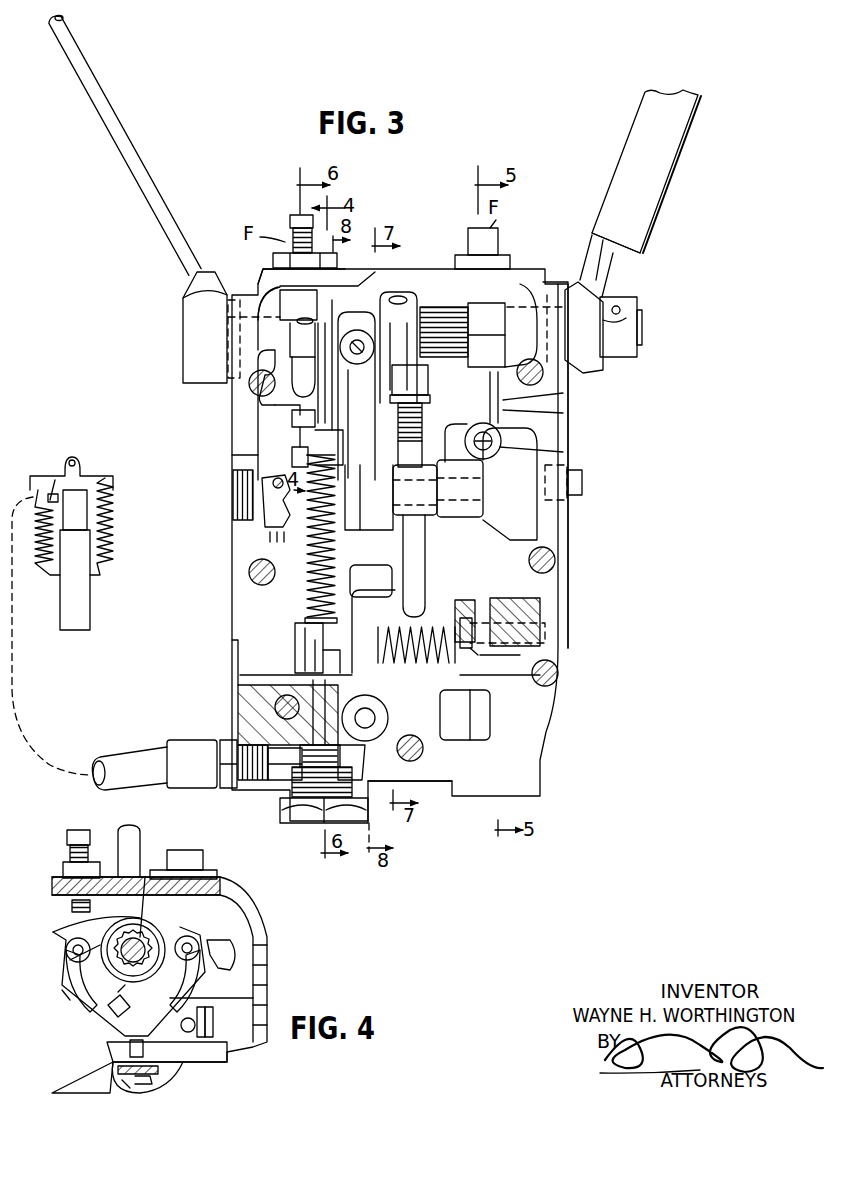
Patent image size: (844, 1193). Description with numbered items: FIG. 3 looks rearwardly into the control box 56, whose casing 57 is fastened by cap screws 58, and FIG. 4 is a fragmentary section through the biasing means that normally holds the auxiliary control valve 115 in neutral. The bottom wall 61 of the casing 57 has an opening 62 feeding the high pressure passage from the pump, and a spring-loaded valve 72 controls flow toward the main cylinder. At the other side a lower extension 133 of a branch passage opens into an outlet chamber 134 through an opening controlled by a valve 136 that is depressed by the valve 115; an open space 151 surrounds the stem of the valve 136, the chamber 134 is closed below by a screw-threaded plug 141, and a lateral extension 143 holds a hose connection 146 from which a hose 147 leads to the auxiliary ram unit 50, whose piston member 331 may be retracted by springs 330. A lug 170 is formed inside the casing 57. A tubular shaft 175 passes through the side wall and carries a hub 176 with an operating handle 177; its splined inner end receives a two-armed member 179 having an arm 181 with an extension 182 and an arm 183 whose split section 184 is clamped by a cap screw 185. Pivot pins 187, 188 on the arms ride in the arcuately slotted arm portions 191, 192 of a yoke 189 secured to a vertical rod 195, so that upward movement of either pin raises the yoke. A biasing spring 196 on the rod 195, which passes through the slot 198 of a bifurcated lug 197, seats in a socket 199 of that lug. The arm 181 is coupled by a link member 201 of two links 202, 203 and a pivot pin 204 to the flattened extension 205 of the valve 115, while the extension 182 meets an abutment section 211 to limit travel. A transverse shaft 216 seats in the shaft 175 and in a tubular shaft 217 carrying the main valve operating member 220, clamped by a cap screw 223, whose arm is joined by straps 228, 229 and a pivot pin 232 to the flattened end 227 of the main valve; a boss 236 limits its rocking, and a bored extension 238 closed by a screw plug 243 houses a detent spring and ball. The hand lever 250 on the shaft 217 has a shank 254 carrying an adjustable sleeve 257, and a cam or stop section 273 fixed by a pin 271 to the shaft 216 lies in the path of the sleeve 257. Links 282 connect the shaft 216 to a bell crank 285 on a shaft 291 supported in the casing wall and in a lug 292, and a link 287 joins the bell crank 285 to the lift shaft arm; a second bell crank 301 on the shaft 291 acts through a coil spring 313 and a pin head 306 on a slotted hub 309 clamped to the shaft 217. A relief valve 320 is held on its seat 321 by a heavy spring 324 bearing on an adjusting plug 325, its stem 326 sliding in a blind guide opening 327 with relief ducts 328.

In FIG. 3, the auxiliary cylinder or ram unit 50 is at (97, 593).
In FIG. 3, the valve or control box 56 is at (228, 456).
In FIG. 3, the casing or housing 57 is at (558, 517).
In FIG. 4, the casing or housing 57 is at (263, 957).
In FIG. 3, the cap screws 58 is at (556, 562).
In FIG. 3, the bottom wall 61 is at (432, 766).
In FIG. 3, the opening 62 is at (483, 723).
In FIG. 3, the valve 72 is at (376, 707).
In FIG. 4, the second control valve 115 is at (202, 1020).
In FIG. 3, the lower extension 133 is at (253, 723).
In FIG. 3, the outlet chamber 134 is at (355, 765).
In FIG. 3, the valve 136 is at (350, 755).
In FIG. 3, the screw-threaded plug 141 is at (300, 814).
In FIG. 3, the lateral extension 143 is at (283, 765).
In FIG. 3, the hose connection 146 is at (180, 738).
In FIG. 3, the hose 147 is at (120, 762).
In FIG. 3, the open space 151 is at (341, 662).
In FIG. 3, the lug 170 is at (376, 582).
In FIG. 4, the tubular shaft member 175 is at (132, 920).
In FIG. 3, the hub member 176 is at (197, 312).
In FIG. 3, the operating handle 177 is at (153, 217).
In FIG. 4, the operating handle 177 is at (131, 840).
In FIG. 4, the two-armed member 179 is at (88, 923).
In FIG. 3, the arm 181 is at (276, 333).
In FIG. 4, the arm 181 is at (167, 931).
In FIG. 4, the extension 182 is at (220, 960).
In FIG. 3, the arm 183 is at (357, 281).
In FIG. 4, the arm 183 is at (90, 928).
In FIG. 4, the split section 184 is at (107, 982).
In FIG. 4, the clamping cap screw 185 is at (131, 1008).
In FIG. 4, the pivot pin 187 is at (188, 947).
In FIG. 4, the pivot pin 188 is at (70, 952).
In FIG. 3, the yoke member 189 is at (321, 241).
In FIG. 4, the yoke member 189 is at (74, 1002).
In FIG. 4, the arm portion 191 is at (72, 985).
In FIG. 4, the arm portion 192 is at (197, 970).
In FIG. 3, the vertical rod 195 is at (315, 440).
In FIG. 4, the vertical rod 195 is at (130, 1050).
In FIG. 3, the biasing spring 196 is at (307, 583).
In FIG. 4, the biasing spring 196 is at (132, 1090).
In FIG. 3, the bifurcated lug 197 is at (292, 458).
In FIG. 4, the bifurcated lug 197 is at (127, 1093).
In FIG. 3, the bifurcation or slot 198 is at (236, 485).
In FIG. 4, the socket 199 is at (150, 1078).
In FIG. 4, the link member 201 is at (197, 1030).
In FIG. 3, the link 202 is at (258, 407).
In FIG. 3, the link 203 is at (292, 422).
In FIG. 4, the link 203 is at (200, 998).
In FIG. 4, the pivot pin 204 is at (182, 1033).
In FIG. 3, the flattened extension 205 is at (300, 452).
In FIG. 4, the flattened extension 205 is at (205, 1012).
In FIG. 3, the abutment section 211 is at (273, 283).
In FIG. 3, the transverse shaft 216 is at (643, 330).
In FIG. 4, the transverse shaft 216 is at (145, 878).
In FIG. 3, the tubular shaft 217 is at (428, 288).
In FIG. 3, the main valve operating member 220 is at (489, 292).
In FIG. 3, the clamping cap screw 223 is at (530, 346).
In FIG. 3, the upper flattened end 227 is at (500, 439).
In FIG. 3, the link or strap 228 is at (551, 414).
In FIG. 3, the link or strap 229 is at (551, 392).
In FIG. 3, the pivot pin 232 is at (523, 417).
In FIG. 3, the boss 236 is at (436, 303).
In FIG. 3, the bored extension 238 is at (510, 484).
In FIG. 3, the screw plug 243 is at (557, 460).
In FIG. 3, the hand lever 250 is at (684, 160).
In FIG. 3, the shank section 254 is at (593, 263).
In FIG. 3, the sleeve 257 is at (642, 215).
In FIG. 3, the pin 271 is at (622, 308).
In FIG. 3, the cam or stop section 273 is at (617, 263).
In FIG. 3, the links 282 is at (427, 392).
In FIG. 3, the bell crank 285 is at (357, 518).
In FIG. 3, the link 287 is at (415, 490).
In FIG. 3, the shaft 291 is at (490, 470).
In FIG. 3, the lug 292 is at (466, 515).
In FIG. 3, the bell crank 301 is at (434, 550).
In FIG. 3, the head 306 is at (428, 378).
In FIG. 3, the slotted hub 309 is at (437, 292).
In FIG. 3, the coil spring 313 is at (428, 435).
In FIG. 3, the relief valve 320 is at (488, 612).
In FIG. 3, the seat 321 is at (467, 611).
In FIG. 3, the spring 324 is at (403, 639).
In FIG. 3, the adjusting plug 325 is at (297, 635).
In FIG. 3, the stem 326 is at (480, 648).
In FIG. 3, the blind guide opening 327 is at (510, 633).
In FIG. 3, the relief ducts 328 is at (505, 665).
In FIG. 3, the springs 330 is at (113, 527).
In FIG. 3, the piston member 331 is at (84, 474).